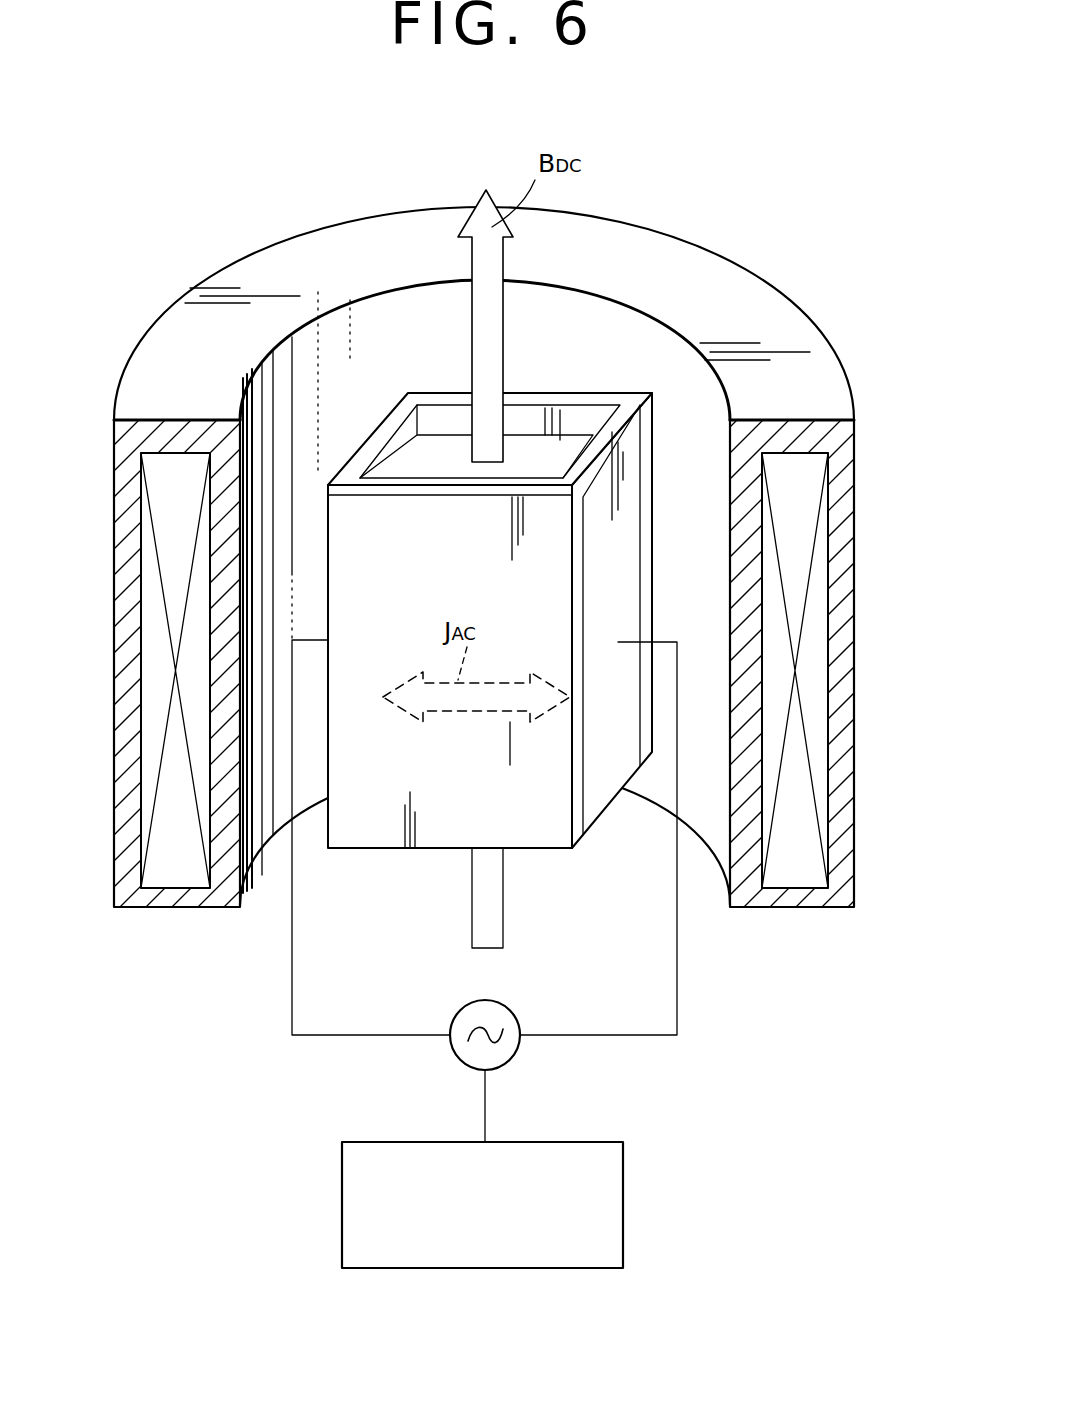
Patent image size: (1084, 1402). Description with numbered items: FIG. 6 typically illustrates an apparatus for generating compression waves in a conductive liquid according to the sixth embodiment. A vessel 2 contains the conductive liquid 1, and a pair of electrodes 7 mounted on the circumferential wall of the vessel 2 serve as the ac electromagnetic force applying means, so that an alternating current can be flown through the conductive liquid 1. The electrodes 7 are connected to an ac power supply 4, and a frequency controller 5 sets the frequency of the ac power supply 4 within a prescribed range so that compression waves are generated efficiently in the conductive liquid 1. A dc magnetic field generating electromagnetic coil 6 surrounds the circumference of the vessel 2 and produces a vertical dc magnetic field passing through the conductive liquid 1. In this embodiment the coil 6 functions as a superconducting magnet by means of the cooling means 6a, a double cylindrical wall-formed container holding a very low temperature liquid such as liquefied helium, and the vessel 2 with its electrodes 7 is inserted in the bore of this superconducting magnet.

The conductive liquid 1 is at (540, 428).
The vessel 2 is at (600, 410).
The ac power supply 4 is at (518, 1017).
The frequency controller 5 is at (580, 1142).
The dc magnetic field generating electromagnetic coil 6 is at (830, 590).
The cooling means 6a is at (855, 658).
The electrodes 7 is at (367, 436).